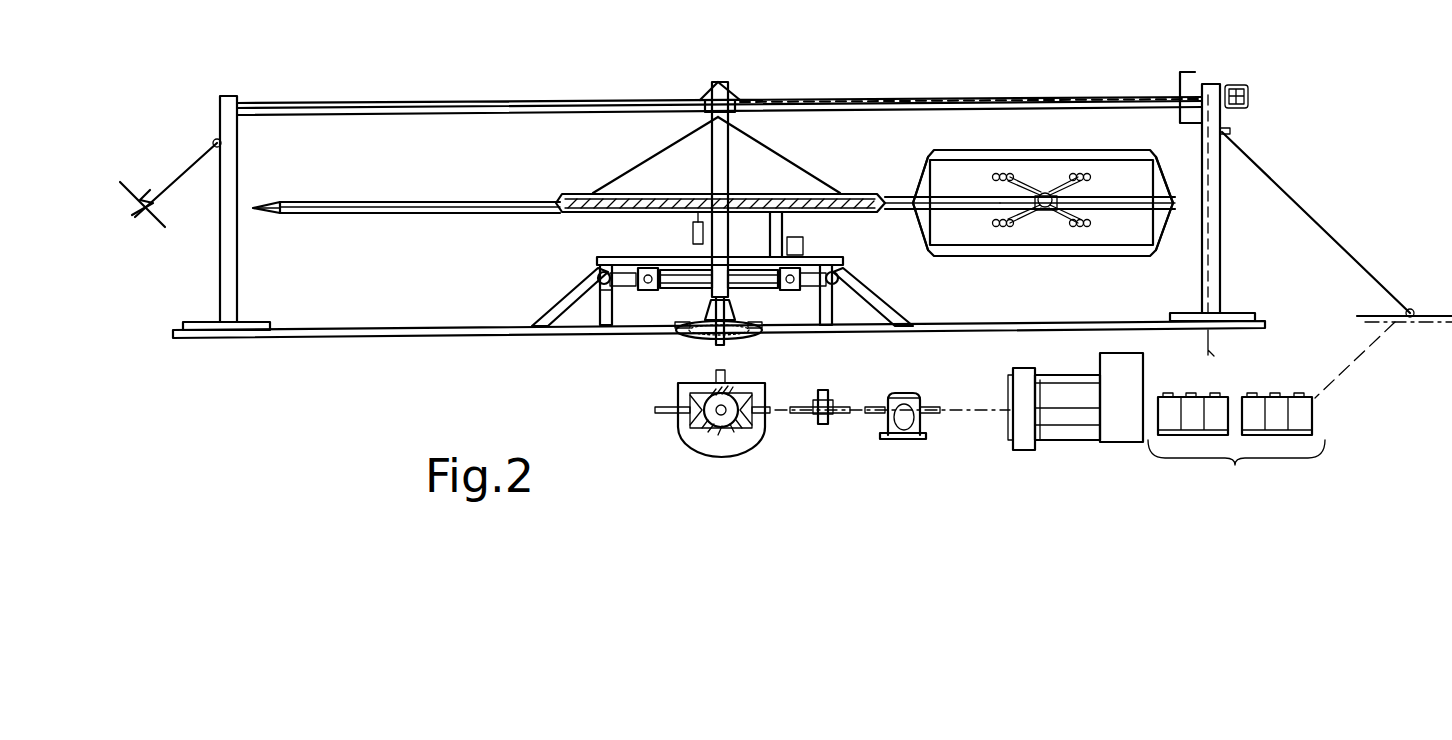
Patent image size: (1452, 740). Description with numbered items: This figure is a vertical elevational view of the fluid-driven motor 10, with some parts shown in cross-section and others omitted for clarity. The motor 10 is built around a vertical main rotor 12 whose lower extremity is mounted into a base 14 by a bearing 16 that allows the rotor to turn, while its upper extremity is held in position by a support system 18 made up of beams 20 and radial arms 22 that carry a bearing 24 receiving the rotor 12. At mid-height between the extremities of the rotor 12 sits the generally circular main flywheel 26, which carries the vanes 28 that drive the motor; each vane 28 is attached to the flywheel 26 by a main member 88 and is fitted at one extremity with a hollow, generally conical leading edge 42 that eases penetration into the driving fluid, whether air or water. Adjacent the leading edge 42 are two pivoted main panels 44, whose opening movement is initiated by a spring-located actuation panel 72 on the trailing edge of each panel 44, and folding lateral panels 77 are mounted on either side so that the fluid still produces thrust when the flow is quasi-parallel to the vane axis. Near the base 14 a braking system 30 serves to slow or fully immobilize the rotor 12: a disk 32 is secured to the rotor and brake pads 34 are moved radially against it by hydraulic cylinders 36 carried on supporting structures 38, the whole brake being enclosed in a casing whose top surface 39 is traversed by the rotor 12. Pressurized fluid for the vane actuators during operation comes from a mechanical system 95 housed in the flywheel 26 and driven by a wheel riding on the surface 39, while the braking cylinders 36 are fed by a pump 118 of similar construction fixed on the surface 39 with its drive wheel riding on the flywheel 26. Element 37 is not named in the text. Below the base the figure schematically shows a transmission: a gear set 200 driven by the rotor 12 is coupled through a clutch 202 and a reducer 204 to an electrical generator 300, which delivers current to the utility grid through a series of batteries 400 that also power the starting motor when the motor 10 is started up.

The motor 10 is at (805, 62).
The main rotor 12 is at (735, 117).
The base 14 is at (750, 340).
The bearing 16 is at (690, 310).
The support system 18 is at (1018, 96).
The beams 20 is at (237, 258).
The radial arms 22 is at (398, 100).
The bearing 24 is at (712, 92).
The main flywheel 26 is at (862, 194).
The vanes 28 is at (400, 202).
The braking system 30 is at (748, 292).
The disk 32 is at (685, 310).
The brake pads 34 is at (840, 258).
The hydraulic cylinders 36 is at (610, 275).
The support column 37 is at (888, 322).
The supporting structures 38 is at (555, 288).
The top surface 39 is at (770, 262).
The leading edge 42 is at (300, 202).
The main panels 44 is at (1100, 172).
The actuation panel 72 is at (1043, 160).
The folding lateral panels 77 is at (916, 188).
The main member 88 is at (905, 210).
The mechanical system 95 is at (692, 235).
The pump 118 is at (804, 240).
The gear set 200 is at (740, 448).
The clutch 202 is at (830, 425).
The reducer 204 is at (922, 432).
The generator 300 is at (1080, 440).
The batteries 400 is at (1236, 445).